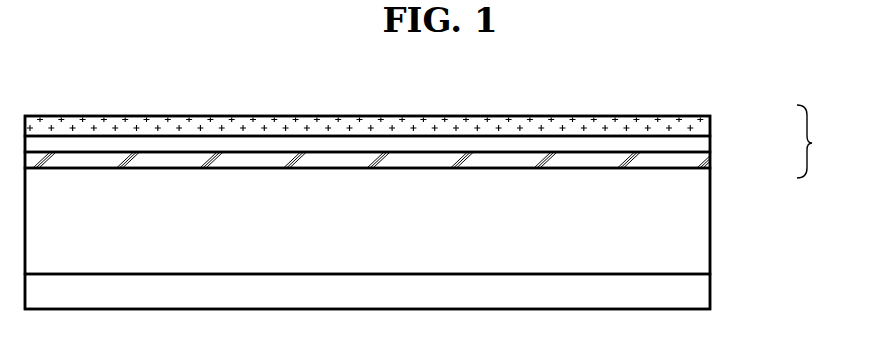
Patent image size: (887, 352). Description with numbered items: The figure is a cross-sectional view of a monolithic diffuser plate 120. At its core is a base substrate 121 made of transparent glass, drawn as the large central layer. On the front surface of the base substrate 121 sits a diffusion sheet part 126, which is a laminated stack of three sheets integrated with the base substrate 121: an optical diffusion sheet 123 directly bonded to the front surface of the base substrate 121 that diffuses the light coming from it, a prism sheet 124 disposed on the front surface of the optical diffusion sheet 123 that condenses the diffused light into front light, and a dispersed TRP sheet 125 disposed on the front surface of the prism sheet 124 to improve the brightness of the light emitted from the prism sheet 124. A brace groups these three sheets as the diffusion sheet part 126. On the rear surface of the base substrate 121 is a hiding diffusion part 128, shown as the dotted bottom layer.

The diffuser plate 120 is at (654, 68).
The base substrate 121 is at (702, 220).
The optical diffusion sheet 123 is at (702, 163).
The prism sheet 124 is at (700, 142).
The dispersed TRP sheet 125 is at (703, 126).
The diffusion sheet part 126 is at (826, 141).
The hiding diffusion part 128 is at (702, 293).